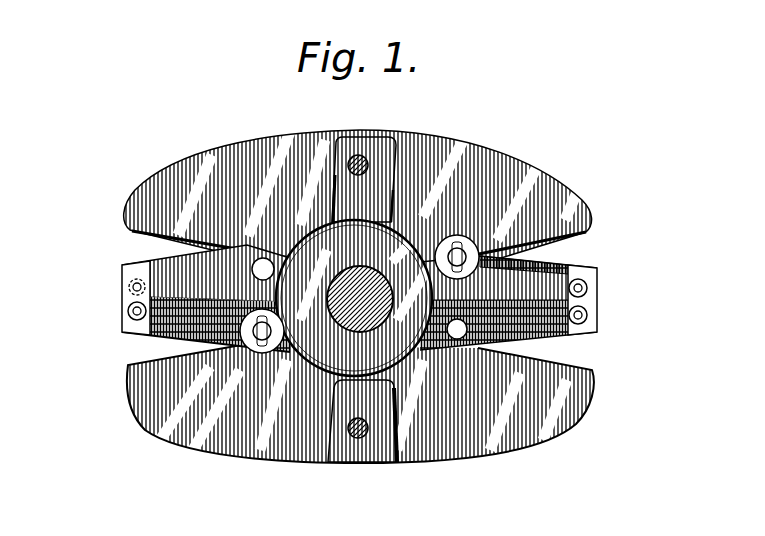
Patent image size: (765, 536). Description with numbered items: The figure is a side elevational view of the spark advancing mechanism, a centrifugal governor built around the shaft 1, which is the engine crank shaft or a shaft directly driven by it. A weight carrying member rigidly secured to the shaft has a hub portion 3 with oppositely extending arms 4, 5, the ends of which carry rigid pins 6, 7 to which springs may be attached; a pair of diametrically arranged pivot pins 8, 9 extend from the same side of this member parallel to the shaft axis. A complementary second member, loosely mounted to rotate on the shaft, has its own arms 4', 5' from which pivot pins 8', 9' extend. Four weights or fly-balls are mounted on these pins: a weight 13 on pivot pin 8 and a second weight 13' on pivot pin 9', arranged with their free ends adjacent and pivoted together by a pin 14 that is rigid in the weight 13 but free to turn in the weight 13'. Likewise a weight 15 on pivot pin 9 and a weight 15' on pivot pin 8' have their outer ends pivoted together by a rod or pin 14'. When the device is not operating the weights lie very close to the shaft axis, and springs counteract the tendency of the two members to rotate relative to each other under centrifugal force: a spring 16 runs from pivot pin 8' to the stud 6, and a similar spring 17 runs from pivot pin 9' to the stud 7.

The shaft 1 is at (383, 276).
The hub portion 3 is at (330, 352).
The arm 4 is at (186, 271).
The arm 4' is at (186, 360).
The arm 5 is at (518, 329).
The arm 5' is at (519, 252).
The pin 6 is at (130, 311).
The pin 7 is at (586, 289).
The pivot pin 8 is at (181, 235).
The pivot pin 8' is at (193, 371).
The pivot pin 9 is at (475, 406).
The pivot pin 9' is at (525, 214).
The weight 13 is at (242, 180).
The weight 13' is at (476, 188).
The pin 14 is at (364, 161).
The pin 14' is at (362, 441).
The weight 15 is at (482, 405).
The weight 15' is at (243, 411).
The spring 16 is at (178, 333).
The spring 17 is at (543, 263).